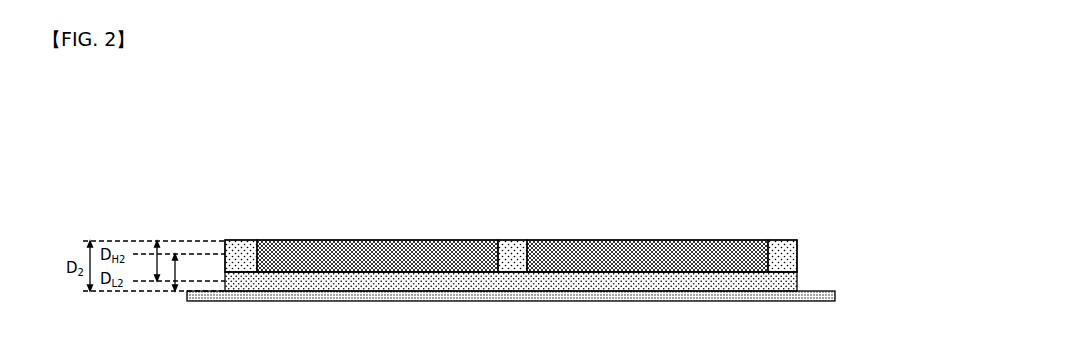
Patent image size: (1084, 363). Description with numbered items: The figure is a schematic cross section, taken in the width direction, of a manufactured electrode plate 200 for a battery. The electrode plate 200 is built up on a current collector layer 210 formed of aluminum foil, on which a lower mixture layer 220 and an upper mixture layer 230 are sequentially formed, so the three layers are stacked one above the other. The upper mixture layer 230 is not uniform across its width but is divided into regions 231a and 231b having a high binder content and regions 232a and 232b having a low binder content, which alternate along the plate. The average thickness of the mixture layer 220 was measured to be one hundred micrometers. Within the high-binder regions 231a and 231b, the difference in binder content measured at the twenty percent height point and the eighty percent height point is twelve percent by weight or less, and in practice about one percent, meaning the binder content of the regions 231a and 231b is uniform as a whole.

The electrode plate 200 is at (93, 158).
The current collector layer 210 is at (835, 296).
The lower mixture layer 220 is at (797, 282).
The upper mixture layer 230 is at (583, 220).
The region having a high binder content 231a is at (247, 239).
The region having a high binder content 231b is at (510, 239).
The region having a low binder content 232a is at (362, 239).
The region having a low binder content 232b is at (665, 239).